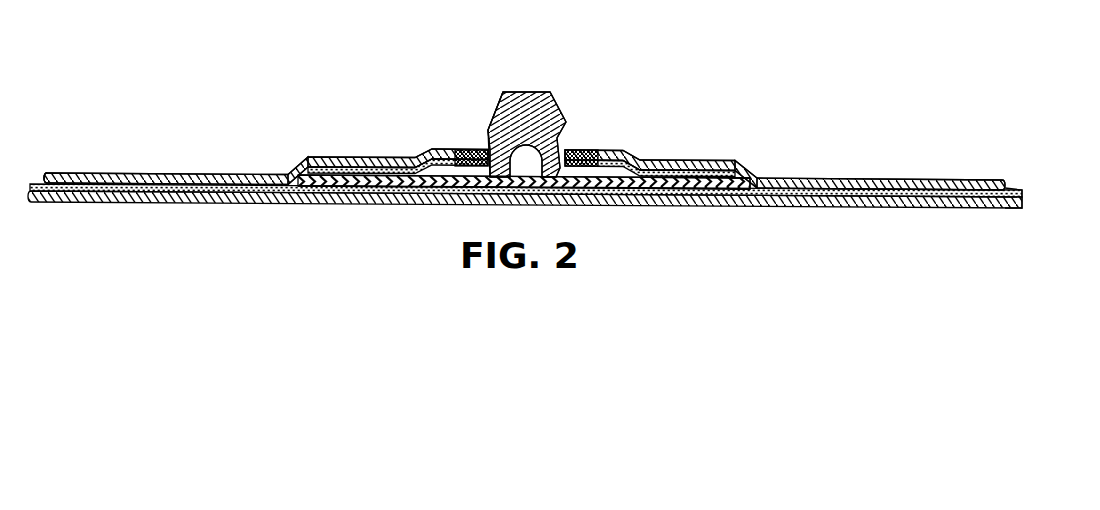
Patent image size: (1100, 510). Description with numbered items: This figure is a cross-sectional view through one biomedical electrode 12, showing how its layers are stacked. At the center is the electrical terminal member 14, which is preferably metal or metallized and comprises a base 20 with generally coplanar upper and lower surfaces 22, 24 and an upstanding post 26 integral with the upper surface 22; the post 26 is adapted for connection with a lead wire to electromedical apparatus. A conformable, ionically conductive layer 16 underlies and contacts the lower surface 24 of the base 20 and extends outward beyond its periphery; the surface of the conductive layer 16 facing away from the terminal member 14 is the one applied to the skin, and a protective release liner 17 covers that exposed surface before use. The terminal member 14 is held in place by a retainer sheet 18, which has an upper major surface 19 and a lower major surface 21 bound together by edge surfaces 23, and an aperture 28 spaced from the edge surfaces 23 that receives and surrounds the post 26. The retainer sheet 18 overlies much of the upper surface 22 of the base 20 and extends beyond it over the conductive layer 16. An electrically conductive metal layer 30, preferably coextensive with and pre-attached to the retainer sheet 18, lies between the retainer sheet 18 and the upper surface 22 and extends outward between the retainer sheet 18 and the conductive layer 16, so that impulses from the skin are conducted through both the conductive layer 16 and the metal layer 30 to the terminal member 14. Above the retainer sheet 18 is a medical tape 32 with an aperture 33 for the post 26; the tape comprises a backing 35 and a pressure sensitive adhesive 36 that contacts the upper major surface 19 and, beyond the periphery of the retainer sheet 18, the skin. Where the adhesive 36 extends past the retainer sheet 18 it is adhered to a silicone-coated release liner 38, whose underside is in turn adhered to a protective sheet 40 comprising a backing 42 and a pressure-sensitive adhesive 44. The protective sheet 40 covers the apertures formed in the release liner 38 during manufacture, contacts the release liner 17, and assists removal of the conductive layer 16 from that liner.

The biomedical electrode 12 is at (525, 177).
The electrical terminal member 14 is at (560, 100).
The ionically conductive layer 16 is at (713, 180).
The protective release liner 17 is at (372, 183).
The retainer sheet 18 is at (710, 170).
The upper major surface 19 is at (733, 165).
The base 20 is at (611, 172).
The lower major surface 21 is at (733, 183).
The upper surface 22 is at (601, 165).
The edge surfaces 23 is at (312, 163).
The lower surface 24 is at (609, 178).
The upstanding post 26 is at (517, 97).
The aperture 28 is at (566, 148).
The metal layer 30 is at (362, 167).
The medical tape 32 is at (151, 170).
The aperture 33 is at (490, 136).
The backing 35 is at (101, 174).
The pressure sensitive adhesive 36 is at (48, 178).
The release liner 38 is at (1019, 188).
The protective sheet 40 is at (901, 210).
The backing 42 is at (856, 205).
The pressure-sensitive adhesive 44 is at (1023, 193).